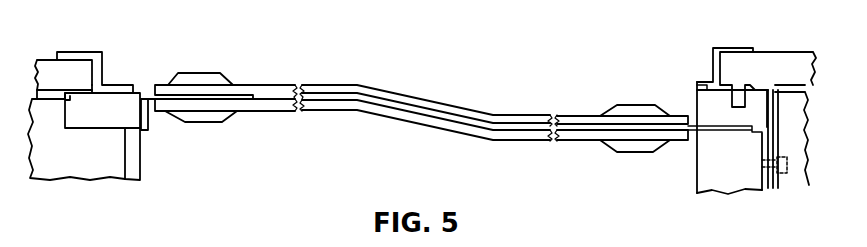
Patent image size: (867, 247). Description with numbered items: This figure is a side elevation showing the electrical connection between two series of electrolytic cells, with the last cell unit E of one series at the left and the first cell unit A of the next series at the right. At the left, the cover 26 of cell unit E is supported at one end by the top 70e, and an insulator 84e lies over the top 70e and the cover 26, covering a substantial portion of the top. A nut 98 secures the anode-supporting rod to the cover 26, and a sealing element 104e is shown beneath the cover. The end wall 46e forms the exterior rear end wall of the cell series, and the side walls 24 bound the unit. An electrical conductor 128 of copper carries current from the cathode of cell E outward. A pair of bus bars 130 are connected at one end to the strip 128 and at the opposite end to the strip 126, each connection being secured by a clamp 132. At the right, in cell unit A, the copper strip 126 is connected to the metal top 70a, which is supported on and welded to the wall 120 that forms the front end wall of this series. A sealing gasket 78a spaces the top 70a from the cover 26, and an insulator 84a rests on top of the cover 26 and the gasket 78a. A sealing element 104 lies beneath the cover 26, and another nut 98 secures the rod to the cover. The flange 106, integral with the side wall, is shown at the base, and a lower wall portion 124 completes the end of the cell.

The last cell unit E is at (48, 60).
The cover plate 26 is at (67, 67).
The insulator 84e is at (103, 65).
The electrical conductor 128 is at (147, 96).
The clamp 132 is at (198, 72).
The bus bars 130 is at (308, 114).
The spacer 104e is at (42, 96).
The nut 98 is at (60, 101).
The top 70e is at (100, 129).
The end wall 46e is at (141, 155).
The side walls 24 is at (78, 173).
The insulator 84a is at (722, 42).
The cell unit A is at (787, 53).
The spacer 104 is at (788, 88).
The sealing gasket 78a is at (700, 88).
The metal top 70a is at (697, 108).
The copper strip 126 is at (715, 131).
The housing 124 is at (697, 187).
The flange 106 is at (773, 189).
The wall 120 is at (783, 162).